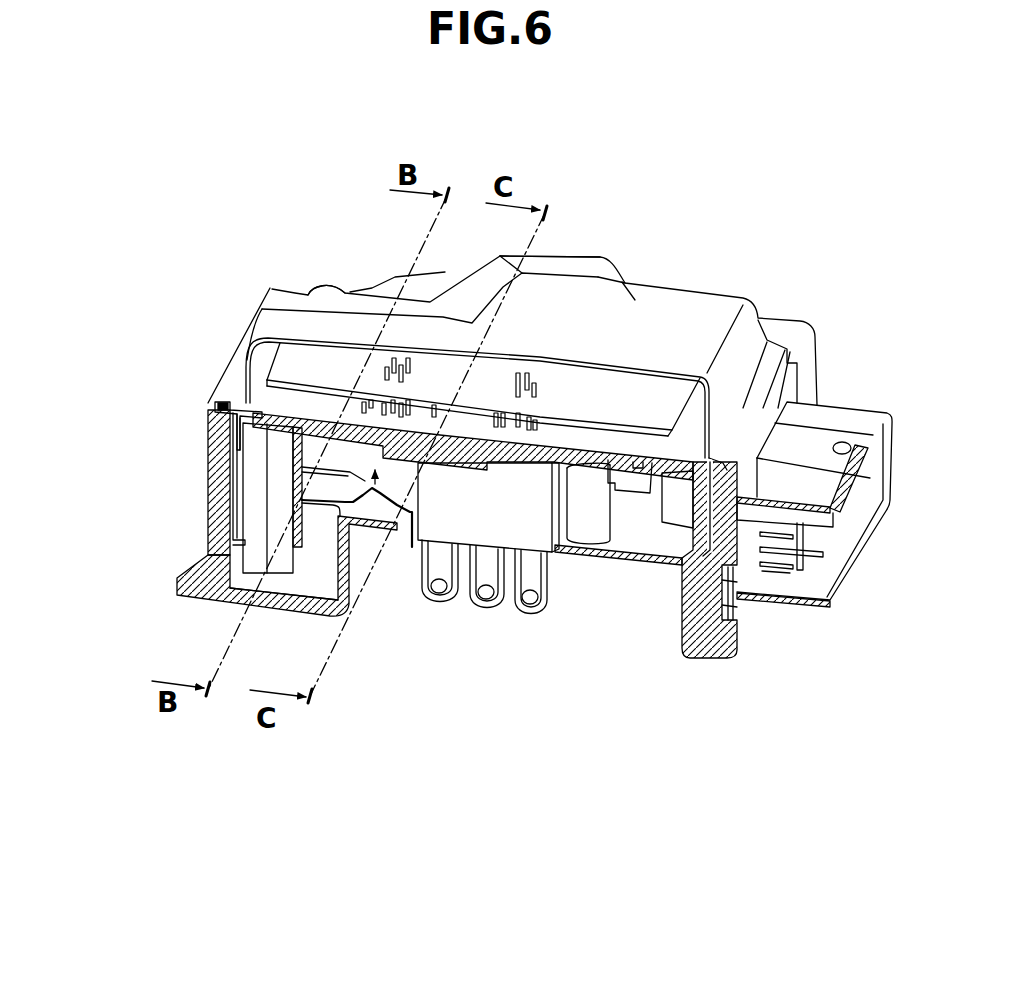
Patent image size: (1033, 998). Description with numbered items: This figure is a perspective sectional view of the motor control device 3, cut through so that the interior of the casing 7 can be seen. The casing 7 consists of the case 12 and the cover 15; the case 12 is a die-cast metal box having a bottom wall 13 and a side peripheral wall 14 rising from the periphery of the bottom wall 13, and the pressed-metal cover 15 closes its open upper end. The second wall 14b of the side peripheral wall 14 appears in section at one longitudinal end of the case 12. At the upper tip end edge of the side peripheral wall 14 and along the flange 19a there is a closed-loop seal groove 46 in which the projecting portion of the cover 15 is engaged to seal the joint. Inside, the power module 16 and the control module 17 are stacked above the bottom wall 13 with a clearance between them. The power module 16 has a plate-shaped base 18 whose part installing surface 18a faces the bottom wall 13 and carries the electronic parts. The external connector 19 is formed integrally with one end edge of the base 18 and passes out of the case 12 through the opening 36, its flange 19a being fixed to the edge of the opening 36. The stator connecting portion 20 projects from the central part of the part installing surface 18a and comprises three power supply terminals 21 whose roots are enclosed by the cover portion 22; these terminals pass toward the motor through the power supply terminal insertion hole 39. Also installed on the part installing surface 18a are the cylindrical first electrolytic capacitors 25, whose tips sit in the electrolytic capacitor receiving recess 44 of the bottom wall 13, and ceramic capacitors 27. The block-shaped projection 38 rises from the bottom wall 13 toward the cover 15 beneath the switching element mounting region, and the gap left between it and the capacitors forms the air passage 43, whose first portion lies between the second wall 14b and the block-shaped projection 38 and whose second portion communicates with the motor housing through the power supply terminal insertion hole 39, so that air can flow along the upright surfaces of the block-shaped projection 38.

The motor control device 3 is at (752, 224).
The casing 7 is at (562, 351).
The case 12 is at (812, 345).
The bottom wall 13 is at (652, 535).
The side peripheral wall 14 is at (397, 555).
The second wall 14b is at (217, 463).
The cover 15 is at (710, 302).
The power module 16 is at (548, 448).
The control module 17 is at (638, 415).
The base 18 is at (550, 256).
The part installing surface 18a is at (330, 432).
The external connector 19 is at (845, 415).
The flange 19a is at (725, 600).
The stator connecting portion 20 is at (577, 742).
The power supply terminals 21 is at (453, 602).
The cover portion 22 is at (438, 522).
The first electrolytic capacitors 25 is at (272, 512).
The ceramic capacitors 27 is at (627, 485).
The opening 36 is at (745, 618).
The block-shaped projection 38 is at (565, 500).
The power supply terminal insertion hole 39 is at (555, 490).
The air passage 43 is at (368, 565).
The electrolytic capacitor receiving recess 44 is at (293, 606).
The seal groove 46 is at (212, 410).